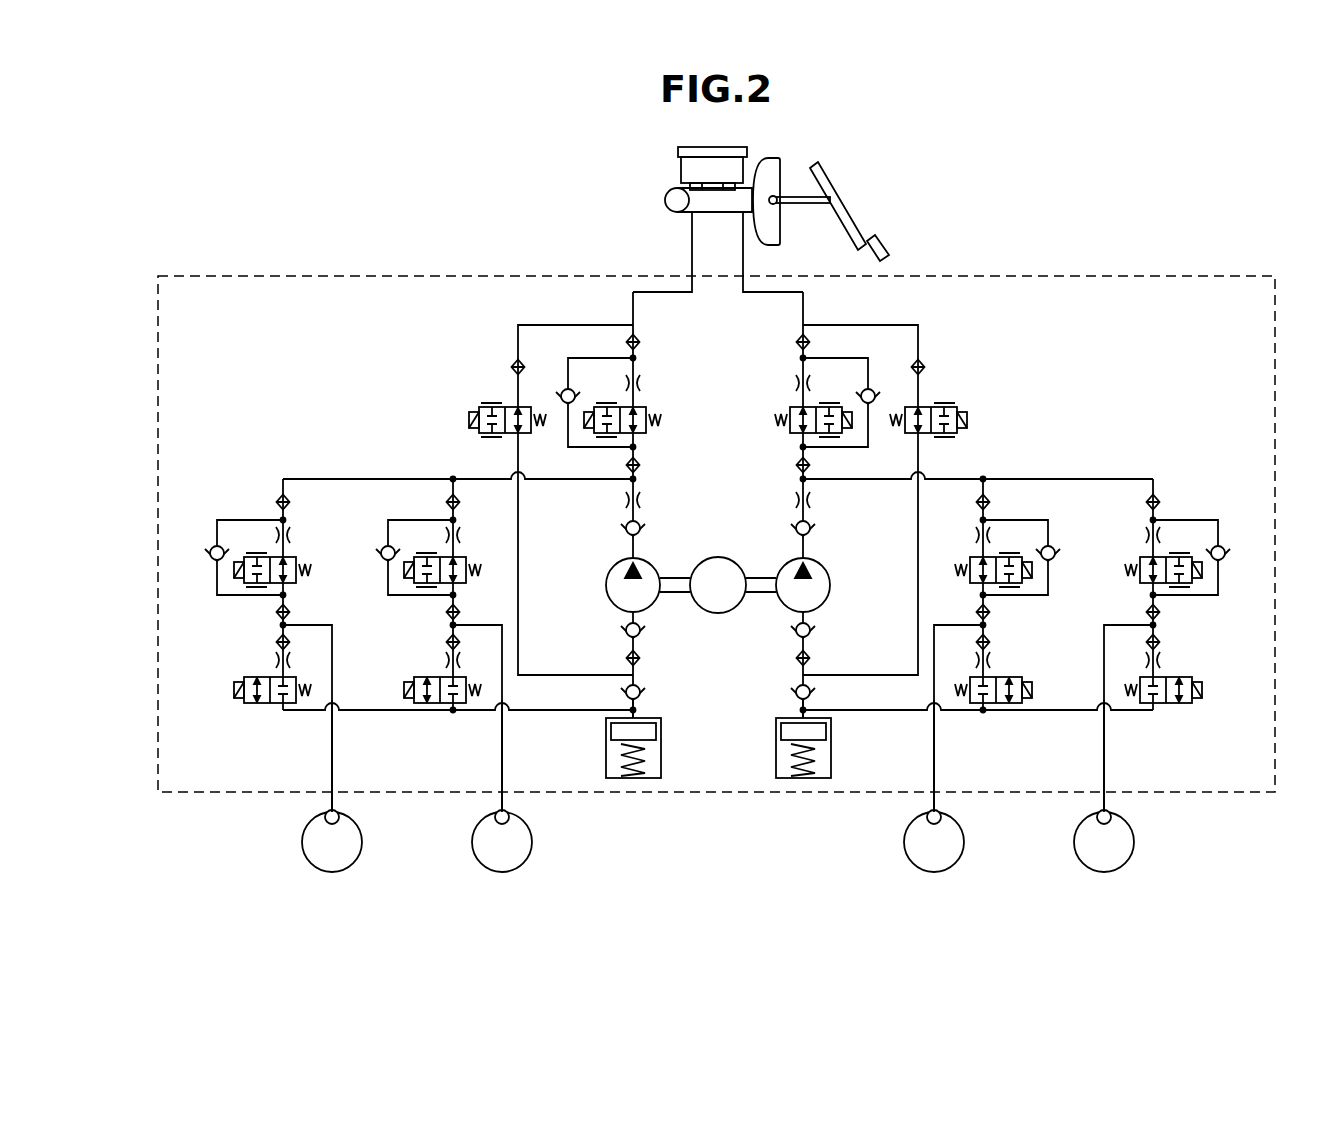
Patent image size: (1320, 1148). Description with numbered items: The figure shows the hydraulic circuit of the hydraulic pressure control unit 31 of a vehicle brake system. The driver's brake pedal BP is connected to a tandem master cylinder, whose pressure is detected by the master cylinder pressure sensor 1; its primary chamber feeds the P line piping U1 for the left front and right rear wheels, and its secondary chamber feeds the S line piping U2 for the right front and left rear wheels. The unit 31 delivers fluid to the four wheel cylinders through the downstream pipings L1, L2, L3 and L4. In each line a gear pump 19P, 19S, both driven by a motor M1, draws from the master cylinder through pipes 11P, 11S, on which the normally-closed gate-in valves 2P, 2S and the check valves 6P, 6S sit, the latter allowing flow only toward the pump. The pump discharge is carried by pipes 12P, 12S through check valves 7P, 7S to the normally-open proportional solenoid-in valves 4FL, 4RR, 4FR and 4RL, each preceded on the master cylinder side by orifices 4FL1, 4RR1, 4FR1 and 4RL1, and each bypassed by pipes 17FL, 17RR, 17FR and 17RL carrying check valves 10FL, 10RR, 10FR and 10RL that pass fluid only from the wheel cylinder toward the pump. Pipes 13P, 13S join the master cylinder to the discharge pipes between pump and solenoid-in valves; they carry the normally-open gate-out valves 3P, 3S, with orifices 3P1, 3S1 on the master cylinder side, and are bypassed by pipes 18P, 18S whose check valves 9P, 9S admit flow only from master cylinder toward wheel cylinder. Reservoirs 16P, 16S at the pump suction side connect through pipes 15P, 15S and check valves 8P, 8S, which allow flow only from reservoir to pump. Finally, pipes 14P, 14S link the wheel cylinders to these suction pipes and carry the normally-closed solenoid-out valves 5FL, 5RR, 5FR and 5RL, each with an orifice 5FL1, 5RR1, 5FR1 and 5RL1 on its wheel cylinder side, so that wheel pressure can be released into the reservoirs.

The master cylinder pressure sensor 1 is at (664, 205).
The brake pedal BP is at (884, 241).
The P line piping U1 is at (690, 242).
The S line piping U2 is at (746, 256).
The hydraulic pressure control unit 31 is at (1115, 276).
The pipe 18P is at (616, 358).
The pipe 18S is at (820, 358).
The orifice 3P1 is at (645, 383).
The orifice 3S1 is at (791, 383).
The check valve 9P is at (562, 393).
The check valve 9S is at (874, 393).
The gate-in valve 2P is at (478, 409).
The gate-in valve 2S is at (958, 409).
The gate-out valve 3P is at (649, 408).
The gate-out valve 3S is at (787, 408).
The pipe 12P is at (641, 482).
The pipe 12S is at (796, 482).
The check valve 7P is at (642, 527).
The check valve 7S is at (795, 527).
The pipe 13P is at (554, 483).
The pipe 13S is at (879, 483).
The pipe 11P is at (518, 595).
The pipe 11S is at (918, 595).
The pipe 14P is at (545, 712).
The pipe 14S is at (882, 712).
The gear pump 19P is at (610, 570).
The gear pump 19S is at (827, 570).
The motor M1 is at (716, 556).
The check valve 6P is at (644, 630).
The check valve 6S is at (792, 630).
The check valve 8P is at (646, 690).
The check valve 8S is at (792, 690).
The pipe 15P is at (641, 714).
The pipe 15S is at (797, 714).
The reservoir 16P is at (662, 748).
The reservoir 16S is at (777, 750).
The pipe 17RR is at (247, 520).
The pipe 17FL is at (417, 520).
The pipe 17FR is at (997, 520).
The pipe 17RL is at (1190, 520).
The check valve 10RR is at (210, 545).
The check valve 10FL is at (382, 545).
The check valve 10FR is at (1082, 534).
The check valve 10RL is at (1246, 522).
The orifice 4RR1 is at (292, 537).
The orifice 4FL1 is at (459, 530).
The orifice 4FR1 is at (979, 529).
The orifice 4RL1 is at (1146, 531).
The solenoid-in valve 4RR is at (298, 586).
The solenoid-in valve 4FL is at (468, 558).
The solenoid-in valve 4FR is at (1030, 586).
The solenoid-in valve 4RL is at (1200, 588).
The orifice 5RR1 is at (275, 660).
The orifice 5FL1 is at (449, 660).
The orifice 5FR1 is at (993, 659).
The orifice 5RL1 is at (1163, 660).
The solenoid-out valve 5RR is at (251, 706).
The solenoid-out valve 5FL is at (421, 676).
The solenoid-out valve 5FR is at (1028, 676).
The solenoid-out valve 5RL is at (1199, 704).
The piping L1 is at (926, 812).
The piping L2 is at (510, 812).
The piping L3 is at (1112, 812).
The piping L4 is at (340, 812).